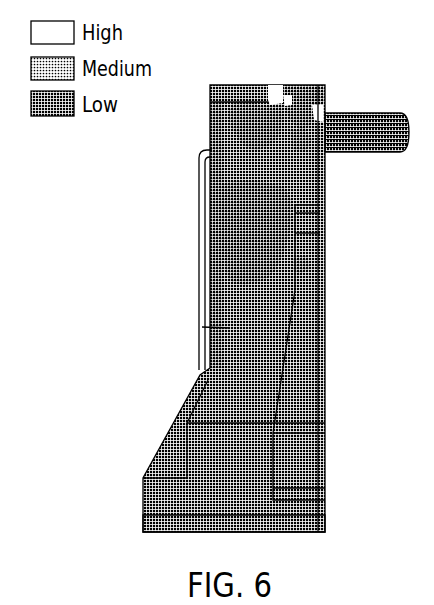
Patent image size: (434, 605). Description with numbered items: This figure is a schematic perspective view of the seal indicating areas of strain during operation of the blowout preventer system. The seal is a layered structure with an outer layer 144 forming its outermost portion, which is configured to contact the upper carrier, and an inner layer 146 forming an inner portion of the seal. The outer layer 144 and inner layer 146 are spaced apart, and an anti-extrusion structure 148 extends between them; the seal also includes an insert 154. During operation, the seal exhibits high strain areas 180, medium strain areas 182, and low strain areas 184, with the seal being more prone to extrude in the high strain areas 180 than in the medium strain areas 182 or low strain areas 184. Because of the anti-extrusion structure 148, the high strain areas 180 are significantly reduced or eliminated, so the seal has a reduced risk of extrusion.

The outer layer 144 is at (326, 383).
The inner layer 146 is at (326, 497).
The anti-extrusion structure 148 is at (326, 467).
The insert 154 is at (368, 112).
The high strain areas 180 is at (277, 84).
The medium strain areas 182 is at (199, 242).
The low strain areas 184 is at (160, 453).